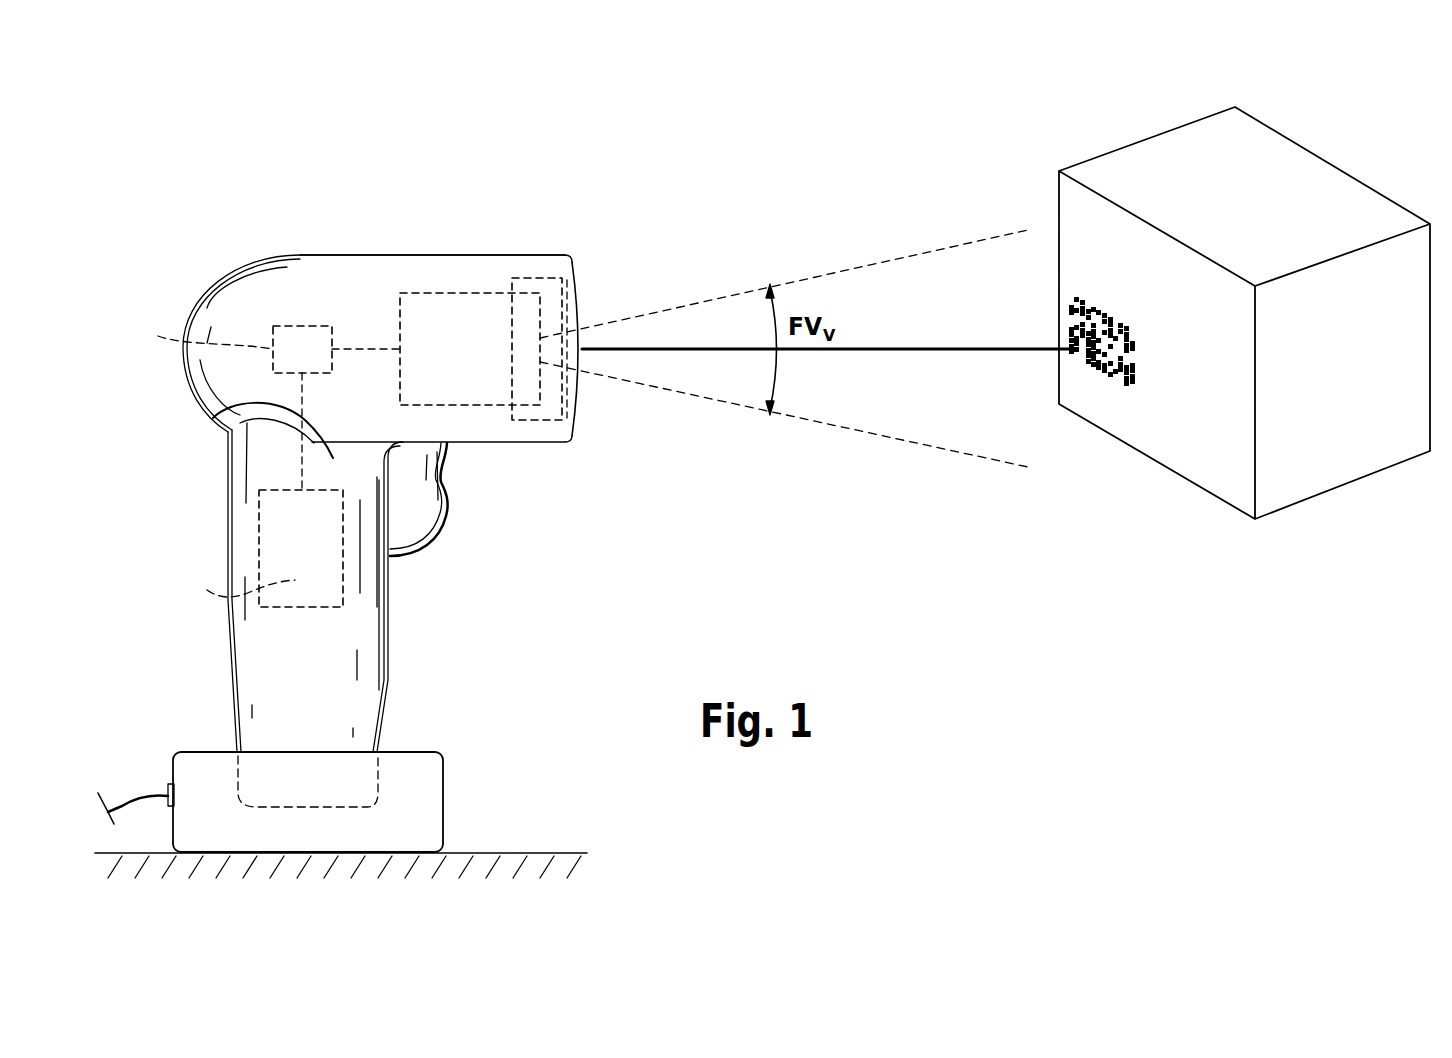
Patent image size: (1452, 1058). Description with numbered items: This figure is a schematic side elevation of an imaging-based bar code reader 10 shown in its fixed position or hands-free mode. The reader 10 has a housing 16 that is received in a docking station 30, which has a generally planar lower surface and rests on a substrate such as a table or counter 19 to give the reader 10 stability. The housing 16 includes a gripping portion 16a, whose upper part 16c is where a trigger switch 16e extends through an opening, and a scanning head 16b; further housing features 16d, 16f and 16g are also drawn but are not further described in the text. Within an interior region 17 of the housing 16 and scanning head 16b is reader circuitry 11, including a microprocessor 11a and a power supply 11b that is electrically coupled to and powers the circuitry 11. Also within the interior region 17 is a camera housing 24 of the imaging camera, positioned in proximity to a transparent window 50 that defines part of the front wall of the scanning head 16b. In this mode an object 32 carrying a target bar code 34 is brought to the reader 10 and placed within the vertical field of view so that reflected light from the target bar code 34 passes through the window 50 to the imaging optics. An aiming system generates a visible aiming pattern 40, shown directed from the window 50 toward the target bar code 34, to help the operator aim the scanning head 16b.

The imaging-based bar code reader 10 is at (325, 185).
The reader circuitry 11 is at (240, 297).
The microprocessor 11a is at (194, 334).
The power supply 11b is at (227, 587).
The housing 16 is at (190, 458).
The gripping portion 16a is at (227, 635).
The scanning head 16b is at (397, 254).
The upper part of gripping portion 16c is at (225, 417).
The handle bottom 16d is at (338, 780).
The trigger switch 16e is at (400, 512).
The front wall 16f is at (572, 256).
The window 16g is at (583, 335).
The interior region 17 is at (357, 310).
The counter 19 is at (548, 853).
The camera housing 24 is at (465, 322).
The docking station 30 is at (443, 757).
The object 32 is at (1169, 281).
The target bar code 34 is at (1101, 308).
The visible aiming pattern 40 is at (937, 350).
The transparent window 50 is at (567, 301).